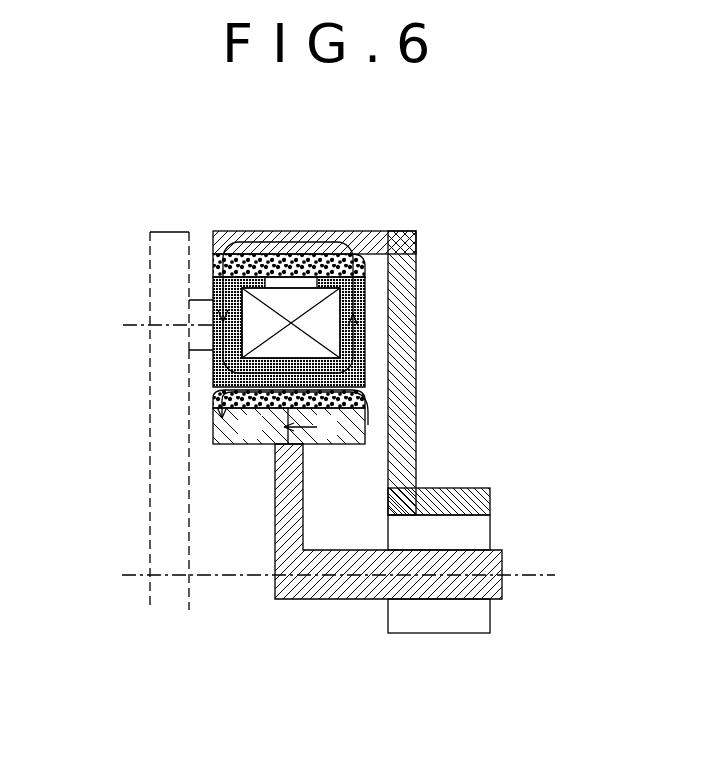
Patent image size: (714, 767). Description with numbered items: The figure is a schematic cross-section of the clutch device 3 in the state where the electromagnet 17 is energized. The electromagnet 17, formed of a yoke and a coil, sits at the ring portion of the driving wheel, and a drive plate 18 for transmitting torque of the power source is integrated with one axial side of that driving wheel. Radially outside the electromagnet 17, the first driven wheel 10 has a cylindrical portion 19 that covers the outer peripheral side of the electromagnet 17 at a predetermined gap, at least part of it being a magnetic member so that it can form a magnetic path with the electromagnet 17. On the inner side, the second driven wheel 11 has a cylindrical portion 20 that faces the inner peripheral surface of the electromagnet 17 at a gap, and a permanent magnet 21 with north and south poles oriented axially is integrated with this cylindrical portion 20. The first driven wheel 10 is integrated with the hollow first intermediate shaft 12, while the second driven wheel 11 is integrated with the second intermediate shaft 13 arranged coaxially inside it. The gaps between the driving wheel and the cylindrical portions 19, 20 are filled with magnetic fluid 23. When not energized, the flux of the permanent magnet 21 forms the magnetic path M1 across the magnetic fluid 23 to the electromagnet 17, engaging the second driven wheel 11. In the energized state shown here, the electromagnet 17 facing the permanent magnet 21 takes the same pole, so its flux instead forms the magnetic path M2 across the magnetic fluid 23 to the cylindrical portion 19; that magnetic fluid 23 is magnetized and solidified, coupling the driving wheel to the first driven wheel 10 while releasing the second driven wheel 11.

The clutch device 3 is at (393, 187).
The first driven wheel 10 is at (417, 245).
The second driven wheel 11 is at (270, 468).
The first intermediate shaft 12 is at (482, 488).
The second intermediate shaft 13 is at (503, 558).
The electromagnet 17 is at (330, 330).
The drive plate 18 is at (172, 231).
The cylindrical portion 19 is at (312, 231).
The cylindrical portion 20 is at (337, 446).
The permanent magnet 21 is at (228, 432).
The magnetic fluid 23 is at (215, 262).
The magnetic path M1 is at (368, 425).
The magnetic path M2 is at (365, 263).